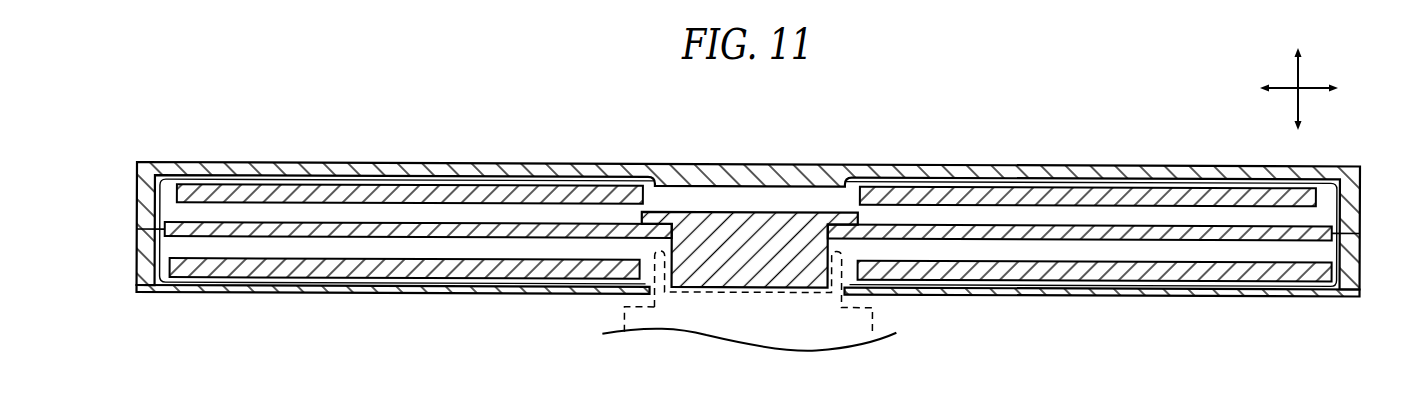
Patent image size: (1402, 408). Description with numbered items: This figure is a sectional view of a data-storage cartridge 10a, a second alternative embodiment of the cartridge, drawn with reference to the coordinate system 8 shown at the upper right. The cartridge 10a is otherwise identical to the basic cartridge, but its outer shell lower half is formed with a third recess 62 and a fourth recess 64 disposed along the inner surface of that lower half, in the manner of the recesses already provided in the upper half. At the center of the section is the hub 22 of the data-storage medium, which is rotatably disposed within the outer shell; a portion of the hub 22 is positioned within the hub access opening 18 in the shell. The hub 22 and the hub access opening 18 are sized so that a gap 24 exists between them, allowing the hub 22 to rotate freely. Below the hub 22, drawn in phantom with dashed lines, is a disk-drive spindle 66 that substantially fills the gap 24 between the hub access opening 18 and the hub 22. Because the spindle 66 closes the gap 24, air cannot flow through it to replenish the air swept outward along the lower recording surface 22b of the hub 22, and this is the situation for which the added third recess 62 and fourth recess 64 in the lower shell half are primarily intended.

The data-storage cartridge 10a is at (175, 108).
The coordinate system 8 is at (1298, 88).
The hub access opening 18 is at (620, 295).
The gap 24 is at (863, 295).
The third recess 62 is at (188, 285).
The fourth recess 64 is at (1082, 292).
The hub 22 is at (766, 246).
The lower surface 22b is at (993, 240).
The spindle 66 is at (798, 329).